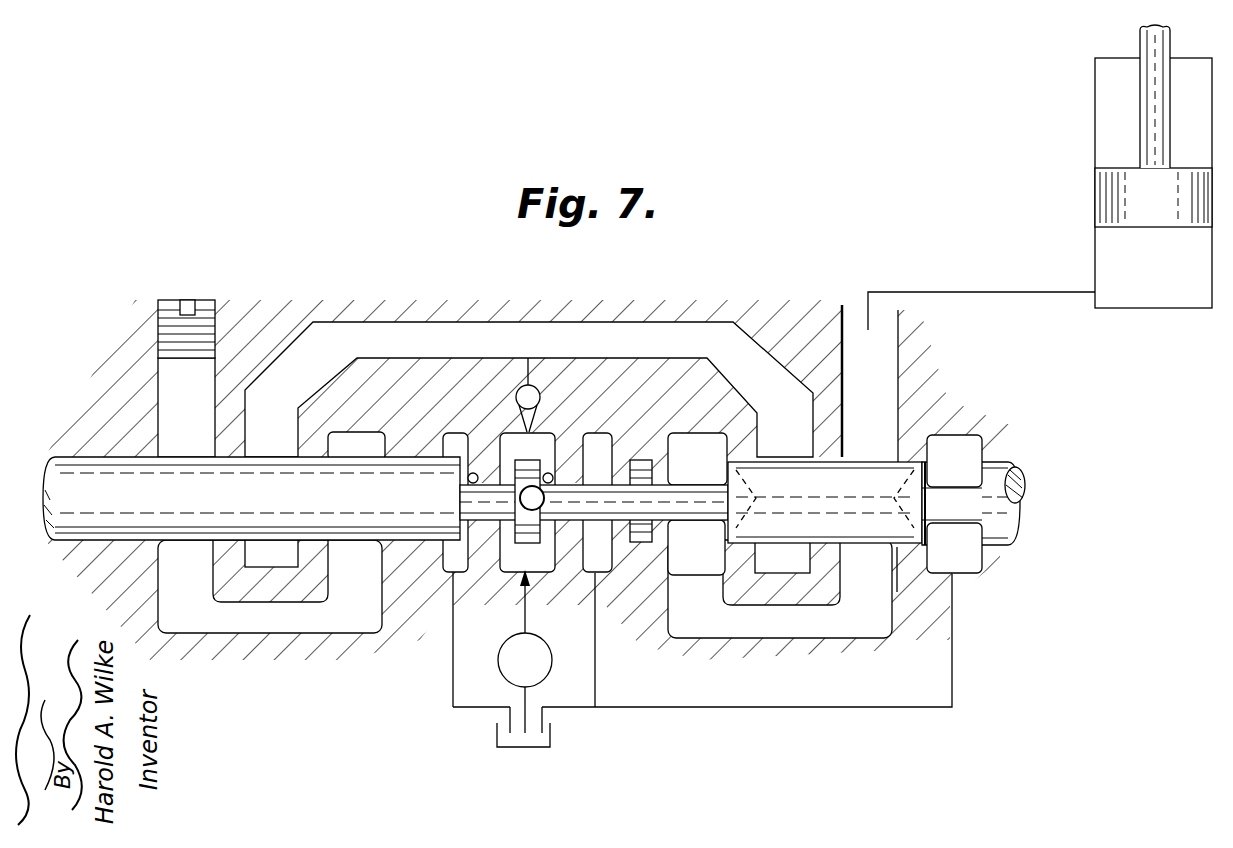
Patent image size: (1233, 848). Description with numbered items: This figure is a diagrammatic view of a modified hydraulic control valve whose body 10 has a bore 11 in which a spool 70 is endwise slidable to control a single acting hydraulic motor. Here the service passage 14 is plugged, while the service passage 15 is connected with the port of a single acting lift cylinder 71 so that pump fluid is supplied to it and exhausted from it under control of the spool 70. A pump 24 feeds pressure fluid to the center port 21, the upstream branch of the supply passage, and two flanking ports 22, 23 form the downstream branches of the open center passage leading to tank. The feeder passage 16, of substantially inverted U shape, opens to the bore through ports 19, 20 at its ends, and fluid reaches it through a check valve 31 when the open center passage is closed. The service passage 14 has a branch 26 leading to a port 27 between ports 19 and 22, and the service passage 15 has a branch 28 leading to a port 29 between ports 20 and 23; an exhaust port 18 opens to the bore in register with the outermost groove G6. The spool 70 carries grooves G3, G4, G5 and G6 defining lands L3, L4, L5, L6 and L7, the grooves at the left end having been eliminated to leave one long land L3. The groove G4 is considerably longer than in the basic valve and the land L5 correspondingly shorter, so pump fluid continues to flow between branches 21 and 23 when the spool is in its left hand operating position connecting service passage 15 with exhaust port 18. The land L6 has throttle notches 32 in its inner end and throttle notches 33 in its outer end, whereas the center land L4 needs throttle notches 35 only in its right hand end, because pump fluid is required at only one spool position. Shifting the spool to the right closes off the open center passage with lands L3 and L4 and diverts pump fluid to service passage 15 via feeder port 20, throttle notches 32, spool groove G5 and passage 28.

The body 10 is at (668, 288).
The bore 11 is at (1002, 462).
The service passage 14 is at (189, 428).
The service passage 15 is at (876, 388).
The feeder passage 16 is at (470, 348).
The exhaust port 18 is at (952, 442).
The port 19 is at (254, 447).
The feeder port 20 is at (768, 445).
The center port 21 is at (537, 575).
The flanking port 22 is at (457, 575).
The flanking port 23 is at (593, 575).
The pump 24 is at (546, 660).
The branch 26 is at (278, 627).
The port 27 is at (368, 446).
The branch 28 is at (782, 632).
The port 29 is at (724, 440).
The check valve 31 is at (538, 388).
The throttle notches 32 is at (751, 493).
The throttle notches 33 is at (899, 493).
The throttle notches 35 is at (545, 490).
The spool 70 is at (1005, 515).
The single acting lift cylinder 71 is at (1095, 133).
The land L3 is at (268, 507).
The center land L4 is at (527, 502).
The land L5 is at (697, 459).
The land L6 is at (835, 507).
The land L7 is at (1028, 478).
The groove G3 is at (455, 485).
The groove G4 is at (598, 486).
The groove G5 is at (690, 526).
The groove G6 is at (950, 526).